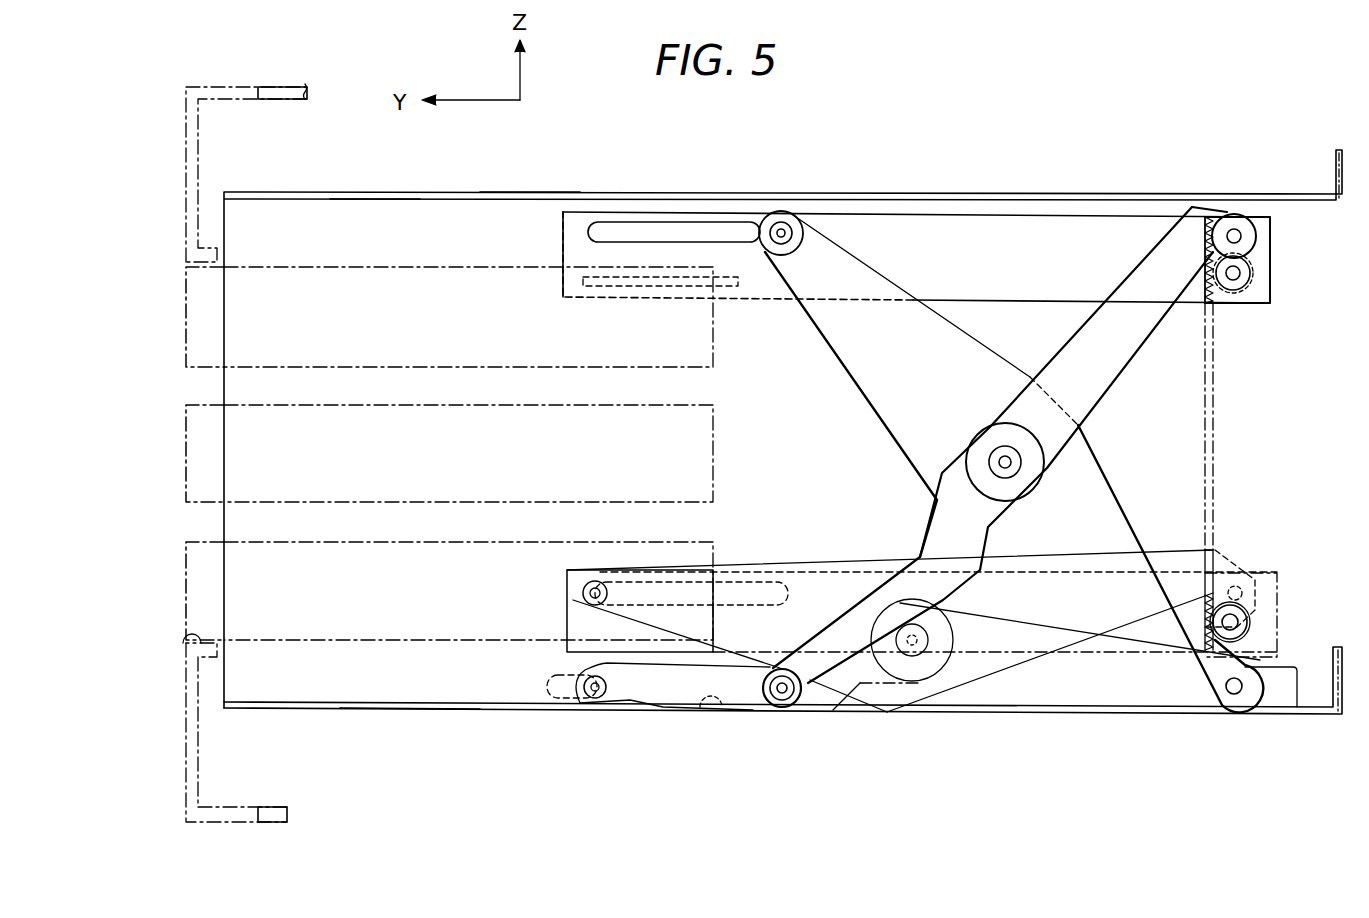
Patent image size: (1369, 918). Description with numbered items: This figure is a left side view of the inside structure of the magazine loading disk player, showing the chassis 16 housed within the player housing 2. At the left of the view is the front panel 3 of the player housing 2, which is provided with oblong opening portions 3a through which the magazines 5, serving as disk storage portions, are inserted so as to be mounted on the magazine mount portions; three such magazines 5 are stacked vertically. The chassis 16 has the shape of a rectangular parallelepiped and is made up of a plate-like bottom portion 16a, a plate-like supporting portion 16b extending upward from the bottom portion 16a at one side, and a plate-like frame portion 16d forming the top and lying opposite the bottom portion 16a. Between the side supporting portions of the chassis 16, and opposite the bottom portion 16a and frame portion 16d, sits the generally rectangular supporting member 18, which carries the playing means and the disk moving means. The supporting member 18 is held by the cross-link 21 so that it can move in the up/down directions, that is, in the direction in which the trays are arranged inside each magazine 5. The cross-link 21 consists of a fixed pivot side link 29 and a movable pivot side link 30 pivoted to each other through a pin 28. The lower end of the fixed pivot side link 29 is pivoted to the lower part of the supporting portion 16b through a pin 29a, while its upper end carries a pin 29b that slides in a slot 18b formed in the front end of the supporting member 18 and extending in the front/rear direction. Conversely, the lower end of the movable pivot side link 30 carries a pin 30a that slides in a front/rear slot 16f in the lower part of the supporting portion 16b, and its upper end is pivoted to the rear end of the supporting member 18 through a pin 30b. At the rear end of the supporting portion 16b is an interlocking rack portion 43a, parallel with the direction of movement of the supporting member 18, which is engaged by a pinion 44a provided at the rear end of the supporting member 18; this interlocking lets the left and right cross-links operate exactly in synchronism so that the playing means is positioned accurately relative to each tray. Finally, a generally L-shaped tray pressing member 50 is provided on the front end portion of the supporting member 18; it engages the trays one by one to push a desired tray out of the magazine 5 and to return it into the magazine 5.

The player housing 2 is at (292, 82).
The front panel 3 is at (197, 138).
The opening portions 3a is at (182, 641).
The magazines 5 is at (195, 415).
The chassis 16 is at (300, 188).
The bottom portion 16a is at (397, 712).
The supporting portion 16b is at (374, 226).
The frame portion 16d is at (528, 196).
The slot 16f is at (715, 700).
The supporting member 18 is at (957, 218).
The slot 18b is at (739, 228).
The cross-link 21 is at (1010, 328).
The pin 28 is at (1012, 464).
The fixed pivot side link 29 is at (1133, 517).
The pin 29a is at (1234, 694).
The pin 29b is at (783, 212).
The movable pivot side link 30 is at (1120, 352).
The pin 30a is at (783, 692).
The pin 30b is at (1242, 236).
The rack portion 43a is at (1224, 303).
The pinion 44a is at (1252, 272).
The tray pressing member 50 is at (662, 276).